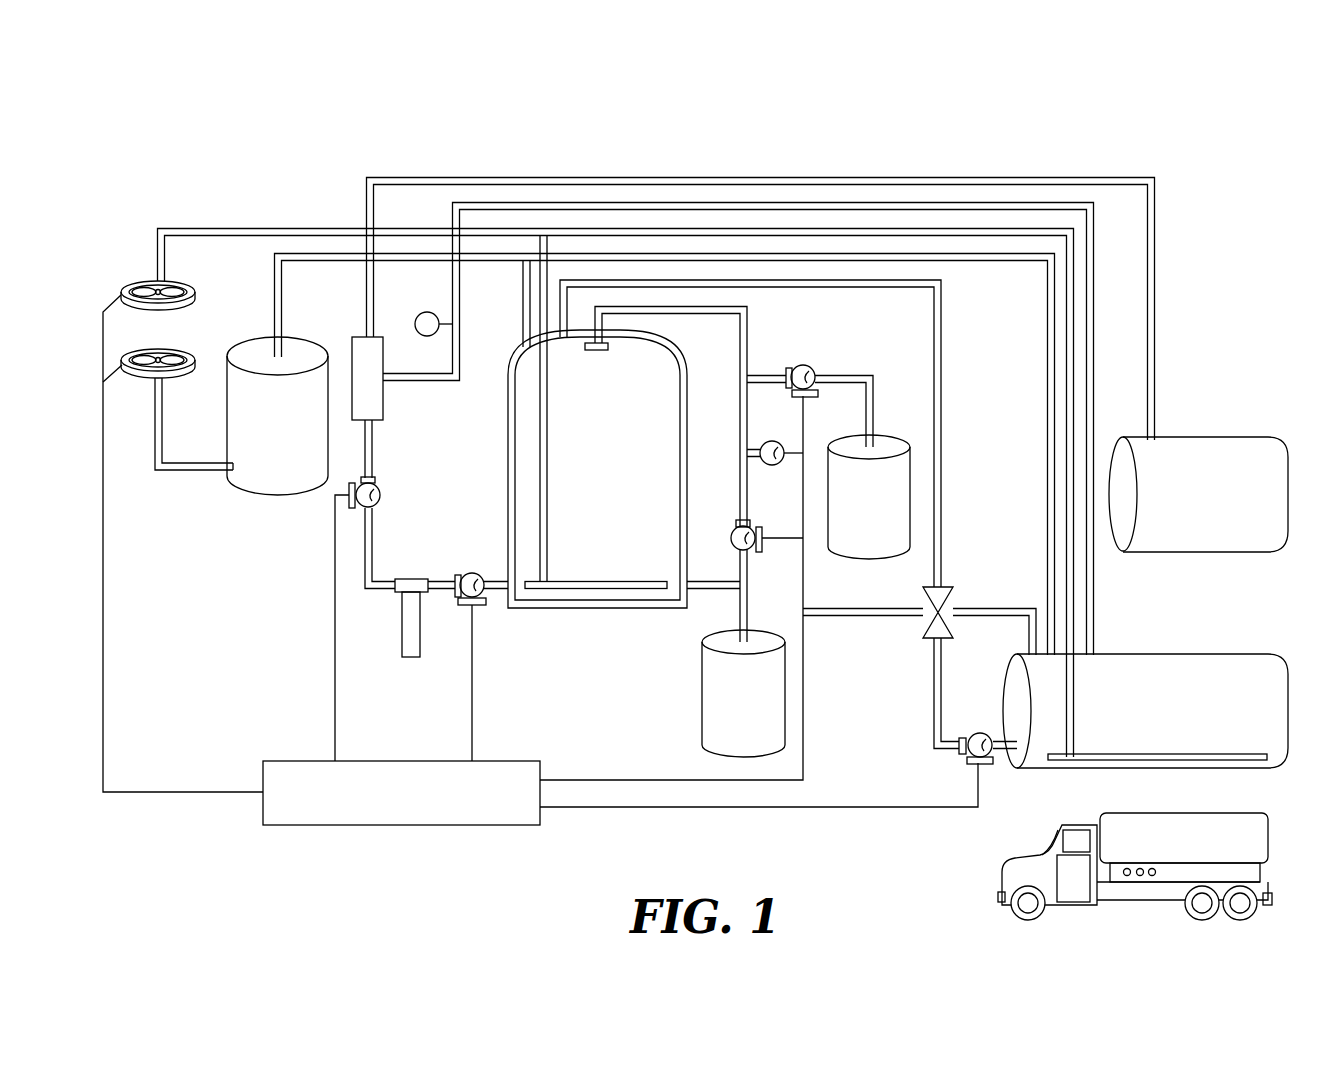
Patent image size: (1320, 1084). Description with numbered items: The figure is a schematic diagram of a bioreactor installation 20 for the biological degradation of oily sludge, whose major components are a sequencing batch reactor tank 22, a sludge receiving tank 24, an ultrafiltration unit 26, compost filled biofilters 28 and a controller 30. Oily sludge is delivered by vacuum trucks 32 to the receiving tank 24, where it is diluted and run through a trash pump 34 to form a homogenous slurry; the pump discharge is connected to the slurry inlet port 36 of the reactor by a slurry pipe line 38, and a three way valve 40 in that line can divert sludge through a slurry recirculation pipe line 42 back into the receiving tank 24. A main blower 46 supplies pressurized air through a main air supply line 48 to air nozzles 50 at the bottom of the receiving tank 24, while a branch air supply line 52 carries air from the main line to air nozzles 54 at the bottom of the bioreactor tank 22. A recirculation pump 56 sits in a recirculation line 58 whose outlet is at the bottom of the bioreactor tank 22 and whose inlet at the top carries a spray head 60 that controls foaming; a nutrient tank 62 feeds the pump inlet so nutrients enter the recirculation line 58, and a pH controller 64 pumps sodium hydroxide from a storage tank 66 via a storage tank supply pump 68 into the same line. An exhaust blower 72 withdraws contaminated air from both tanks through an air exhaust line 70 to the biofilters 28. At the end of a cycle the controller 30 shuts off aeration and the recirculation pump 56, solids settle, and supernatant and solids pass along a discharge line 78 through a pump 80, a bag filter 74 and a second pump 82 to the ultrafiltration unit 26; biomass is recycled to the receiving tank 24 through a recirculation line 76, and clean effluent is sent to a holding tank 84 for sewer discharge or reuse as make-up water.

The bioreactor system 20 is at (1200, 228).
The sequencing batch reactor tank 22 is at (568, 608).
The sludge receiving tank 24 is at (1240, 652).
The ultrafiltration unit 26 is at (384, 412).
The compost filled biofilters 28 is at (263, 483).
The controller 30 is at (293, 770).
The vacuum truck 32 is at (1005, 875).
The trash pump 34 is at (980, 740).
The slurry inlet port 36 is at (540, 348).
The slurry pipe line 38 is at (945, 336).
The three way valve 40 is at (930, 598).
The slurry recirculation pipe line 42 is at (988, 608).
The main blower 46 is at (196, 300).
The main air supply line 48 is at (213, 228).
The air nozzles 50 is at (1250, 755).
The branch air supply line 52 is at (540, 300).
The air nozzles 54 is at (600, 582).
The recirculation pump 56 is at (738, 545).
The recirculation line 58 is at (706, 312).
The spray head 60 is at (598, 353).
The nutrient tank 62 is at (712, 712).
The pH controller 64 is at (778, 447).
The storage tank 66 is at (905, 458).
The storage tank supply pump 68 is at (810, 372).
The air exhaust line 70 is at (305, 253).
The exhaust blower 72 is at (198, 368).
The bag filter 74 is at (408, 582).
The recirculation line 76 is at (610, 203).
The discharge line 78 is at (503, 177).
The pump 80 is at (468, 582).
The pump 82 is at (381, 497).
The holding tank 84 is at (1242, 437).